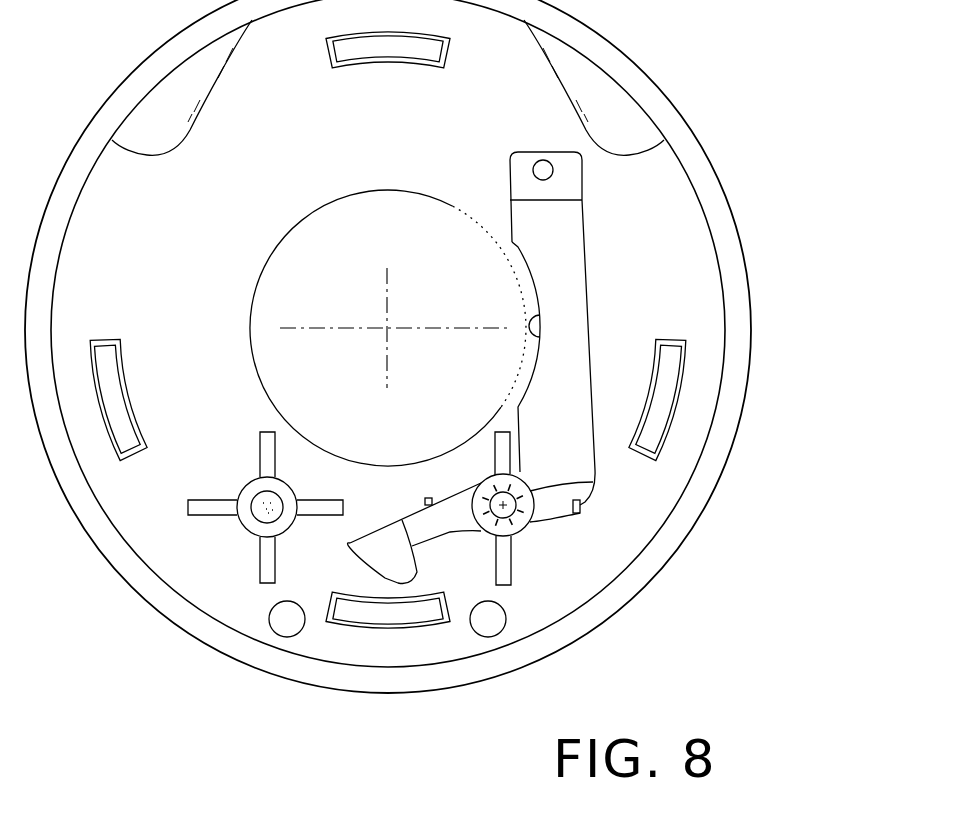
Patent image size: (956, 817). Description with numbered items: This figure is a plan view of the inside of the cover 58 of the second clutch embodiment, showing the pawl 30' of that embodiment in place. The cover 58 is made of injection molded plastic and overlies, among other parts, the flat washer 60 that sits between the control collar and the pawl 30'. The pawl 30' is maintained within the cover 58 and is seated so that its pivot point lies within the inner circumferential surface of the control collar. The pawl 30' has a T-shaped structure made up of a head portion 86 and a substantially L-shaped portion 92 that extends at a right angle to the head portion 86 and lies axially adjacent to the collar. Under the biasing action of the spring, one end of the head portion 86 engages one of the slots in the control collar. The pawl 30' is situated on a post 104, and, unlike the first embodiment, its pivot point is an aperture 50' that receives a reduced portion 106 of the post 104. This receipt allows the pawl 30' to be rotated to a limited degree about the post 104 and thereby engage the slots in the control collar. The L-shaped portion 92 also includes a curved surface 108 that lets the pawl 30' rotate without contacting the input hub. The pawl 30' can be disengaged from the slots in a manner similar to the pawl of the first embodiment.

The cover 58 is at (625, 50).
The L-shaped portion 92 is at (583, 230).
The pawl 30' is at (656, 353).
The curved surface 108 is at (540, 337).
The aperture 50' is at (591, 489).
The flat washer 60 is at (494, 482).
The reduced portion 106 is at (510, 517).
The post 104 is at (512, 553).
The head portion 86 is at (397, 581).